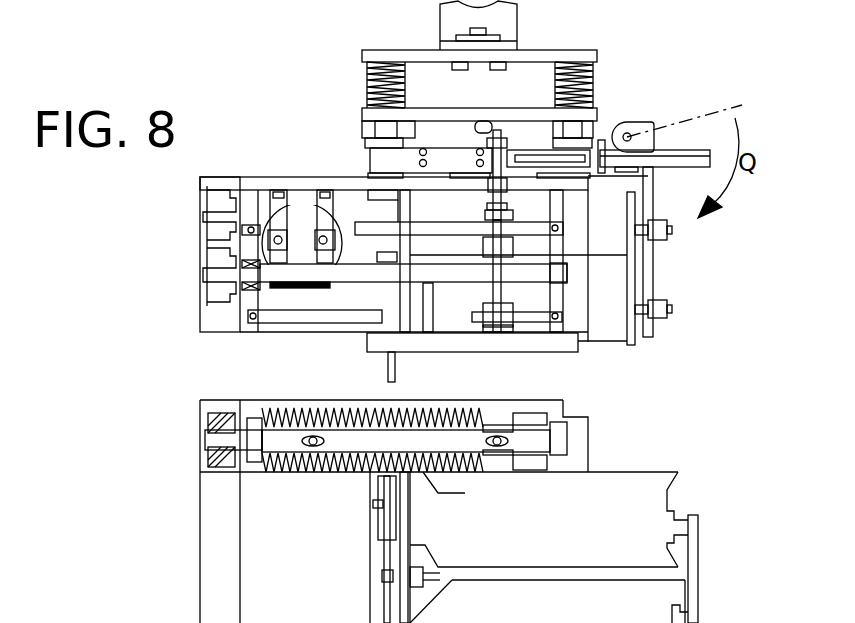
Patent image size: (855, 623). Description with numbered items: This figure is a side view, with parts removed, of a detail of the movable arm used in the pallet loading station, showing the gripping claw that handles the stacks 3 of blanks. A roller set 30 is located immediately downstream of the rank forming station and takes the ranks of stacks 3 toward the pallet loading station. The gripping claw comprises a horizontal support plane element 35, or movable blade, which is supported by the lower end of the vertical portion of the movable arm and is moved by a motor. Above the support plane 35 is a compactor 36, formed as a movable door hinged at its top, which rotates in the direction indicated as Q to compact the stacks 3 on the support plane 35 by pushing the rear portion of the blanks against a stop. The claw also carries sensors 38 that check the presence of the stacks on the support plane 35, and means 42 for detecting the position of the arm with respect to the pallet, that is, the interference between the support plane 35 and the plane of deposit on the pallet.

The roller set 30 is at (507, 23).
The support plane element 35 is at (530, 358).
The stacks 3 is at (600, 333).
The compactor 36 is at (648, 278).
The means for detecting the position of the arm 42 is at (388, 365).
The sensors 38 is at (365, 510).